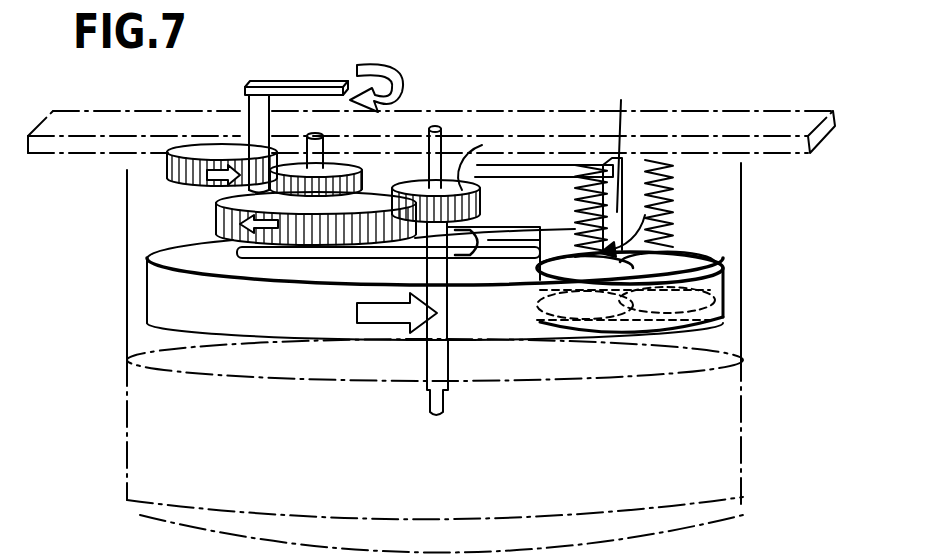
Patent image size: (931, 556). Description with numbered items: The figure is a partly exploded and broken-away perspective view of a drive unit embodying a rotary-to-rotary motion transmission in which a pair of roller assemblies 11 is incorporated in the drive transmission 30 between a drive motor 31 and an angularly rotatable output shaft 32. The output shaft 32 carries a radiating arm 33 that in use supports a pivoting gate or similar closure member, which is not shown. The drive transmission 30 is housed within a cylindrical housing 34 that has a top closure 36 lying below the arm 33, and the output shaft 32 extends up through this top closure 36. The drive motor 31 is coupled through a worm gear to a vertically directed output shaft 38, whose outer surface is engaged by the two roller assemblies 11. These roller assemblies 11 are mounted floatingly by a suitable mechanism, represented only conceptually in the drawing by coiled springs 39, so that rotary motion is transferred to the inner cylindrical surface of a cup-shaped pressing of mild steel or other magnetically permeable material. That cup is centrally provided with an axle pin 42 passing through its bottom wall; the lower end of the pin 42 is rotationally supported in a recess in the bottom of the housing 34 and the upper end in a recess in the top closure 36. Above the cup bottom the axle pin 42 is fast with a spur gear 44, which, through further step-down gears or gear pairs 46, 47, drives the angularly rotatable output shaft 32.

The roller assemblies 11 is at (540, 308).
The drive transmission 30 is at (158, 234).
The drive motor 31 is at (516, 152).
The output shaft 32 is at (257, 123).
The radiating arm 33 is at (305, 83).
The cylindrical housing 34 is at (147, 429).
The top closure 36 is at (752, 122).
The vertically directed output shaft 38 is at (553, 248).
The coiled springs 39 is at (622, 205).
The axle pin 42 is at (430, 127).
The spur gear 44 is at (456, 186).
The step-down gear 46 is at (213, 227).
The step-down gear 47 is at (173, 163).